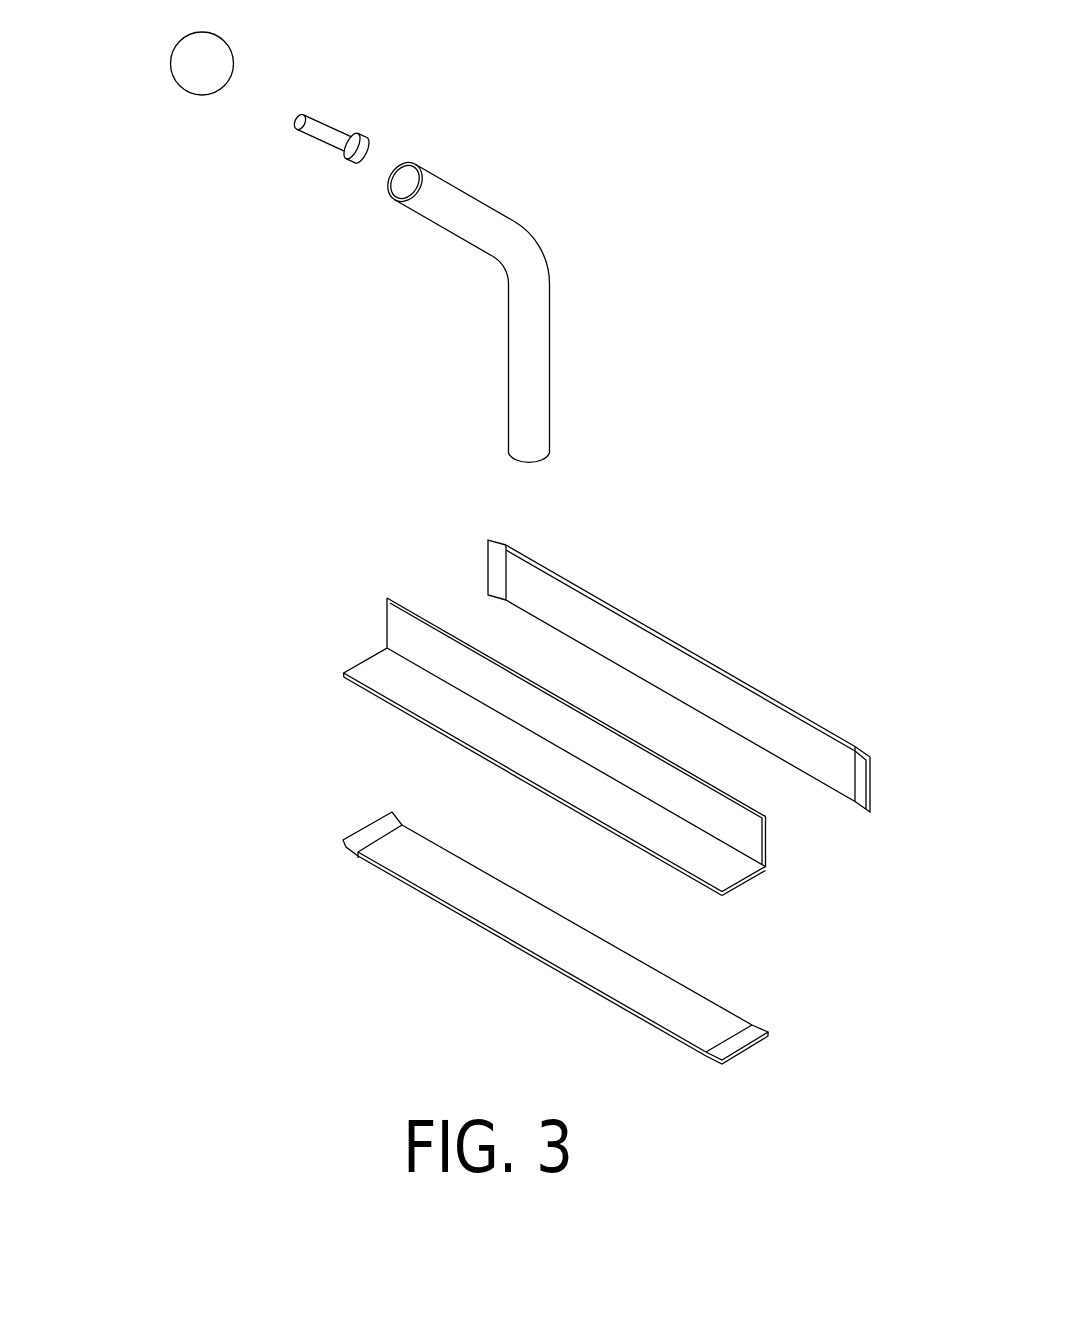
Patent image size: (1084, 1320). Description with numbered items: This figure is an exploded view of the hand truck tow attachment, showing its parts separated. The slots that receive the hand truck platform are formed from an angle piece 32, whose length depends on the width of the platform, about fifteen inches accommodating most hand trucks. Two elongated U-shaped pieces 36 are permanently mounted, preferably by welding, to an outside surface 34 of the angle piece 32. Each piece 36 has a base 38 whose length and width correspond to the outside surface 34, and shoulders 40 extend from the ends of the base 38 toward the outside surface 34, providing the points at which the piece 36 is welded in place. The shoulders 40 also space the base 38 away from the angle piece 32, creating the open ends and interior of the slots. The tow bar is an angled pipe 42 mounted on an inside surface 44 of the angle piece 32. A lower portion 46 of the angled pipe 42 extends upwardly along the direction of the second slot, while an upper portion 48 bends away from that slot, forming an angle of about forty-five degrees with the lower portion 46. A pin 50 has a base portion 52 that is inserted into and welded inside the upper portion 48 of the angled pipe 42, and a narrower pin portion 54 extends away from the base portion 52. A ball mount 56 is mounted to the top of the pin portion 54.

The angle piece 32 is at (579, 738).
The outside surface 34 is at (765, 847).
The elongated U-shaped piece 36 is at (630, 773).
The base 38 is at (782, 718).
The shoulder 40 is at (497, 568).
The angled pipe 42 is at (514, 306).
The inside surface 44 is at (423, 702).
The lower portion 46 is at (530, 352).
The upper portion 48 is at (455, 218).
The pin 50 is at (363, 111).
The base portion 52 is at (373, 150).
The pin portion 54 is at (318, 135).
The ball mount 56 is at (185, 57).